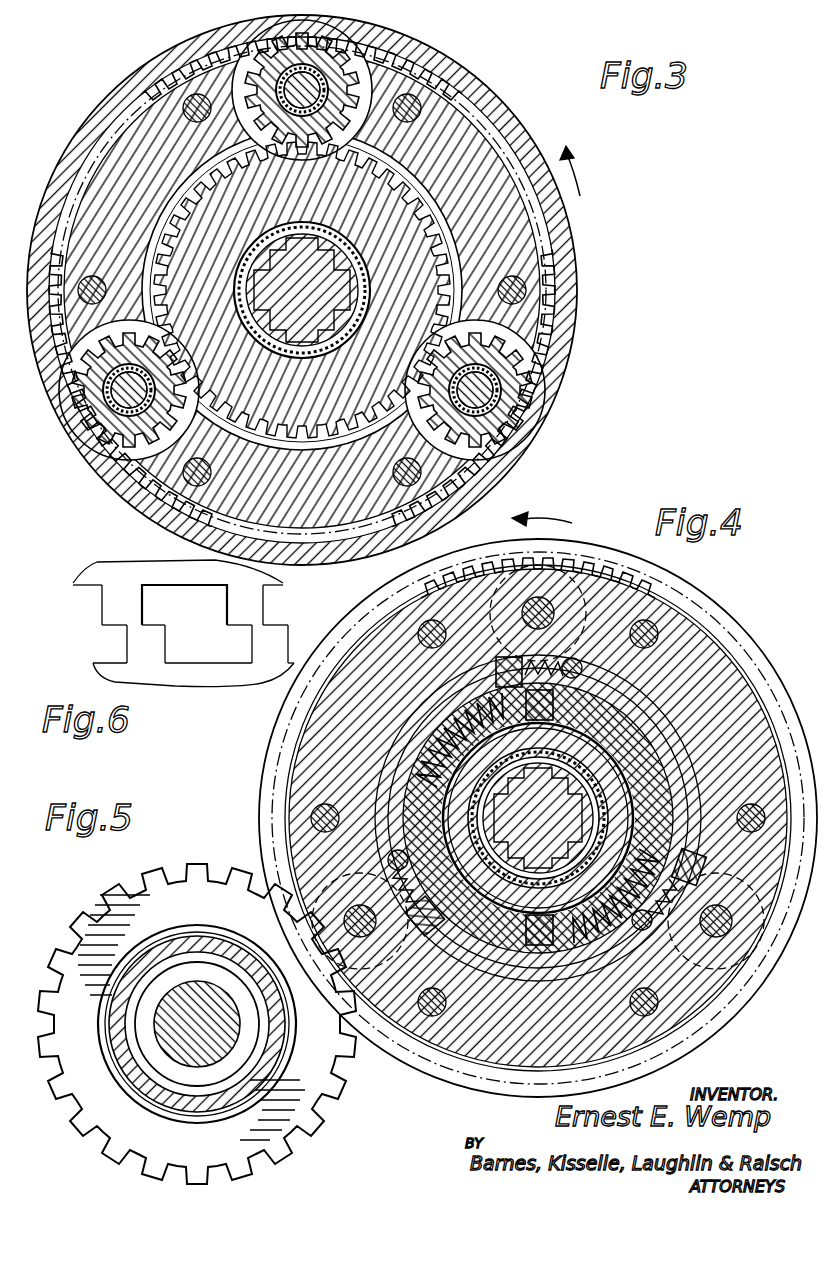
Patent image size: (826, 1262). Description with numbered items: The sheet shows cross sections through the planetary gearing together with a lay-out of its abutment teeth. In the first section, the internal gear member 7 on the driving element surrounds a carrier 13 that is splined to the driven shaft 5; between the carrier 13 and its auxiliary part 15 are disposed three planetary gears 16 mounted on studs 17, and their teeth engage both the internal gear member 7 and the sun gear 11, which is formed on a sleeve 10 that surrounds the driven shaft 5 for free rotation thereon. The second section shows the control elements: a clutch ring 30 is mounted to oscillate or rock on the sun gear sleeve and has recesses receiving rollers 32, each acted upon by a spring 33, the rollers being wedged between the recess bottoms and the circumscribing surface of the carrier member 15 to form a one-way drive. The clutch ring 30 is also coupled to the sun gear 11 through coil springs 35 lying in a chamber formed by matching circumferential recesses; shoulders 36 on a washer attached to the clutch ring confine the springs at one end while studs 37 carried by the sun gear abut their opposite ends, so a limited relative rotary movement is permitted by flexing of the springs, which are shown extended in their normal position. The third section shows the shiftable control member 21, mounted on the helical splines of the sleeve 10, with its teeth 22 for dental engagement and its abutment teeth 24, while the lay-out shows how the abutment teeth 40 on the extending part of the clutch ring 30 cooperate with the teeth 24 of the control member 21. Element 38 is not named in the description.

In FIG. 5, the driven shaft 5 is at (190, 988).
In FIG. 3, the internal gear member 7 is at (427, 48).
In FIG. 4, the internal gear member 7 is at (622, 545).
In FIG. 5, the sleeve 10 is at (223, 958).
In FIG. 3, the sun gear 11 is at (153, 110).
In FIG. 3, the carrier 13 is at (527, 261).
In FIG. 4, the auxiliary part 15 is at (690, 600).
In FIG. 3, the planetary gears 16 is at (253, 73).
In FIG. 4, the planetary gears 16 is at (350, 985).
In FIG. 3, the studs 17 is at (238, 70).
In FIG. 4, the studs 17 is at (500, 560).
In FIG. 6, the shiftable control member 21 is at (120, 572).
In FIG. 5, the shiftable control member 21 is at (83, 913).
In FIG. 5, the teeth 22 is at (117, 893).
In FIG. 6, the abutment teeth 24 is at (255, 603).
In FIG. 5, the abutment teeth 24 is at (230, 905).
In FIG. 6, the clutch ring 30 is at (198, 683).
In FIG. 4, the clutch ring 30 is at (715, 705).
In FIG. 4, the rollers 32 is at (646, 606).
In FIG. 4, the spring 33 is at (496, 660).
In FIG. 4, the coil springs 35 is at (470, 760).
In FIG. 4, the shoulders 36 is at (750, 740).
In FIG. 4, the studs 37 is at (660, 640).
In FIG. 4, the brake band 38 is at (672, 670).
In FIG. 6, the abutment teeth 40 is at (282, 650).